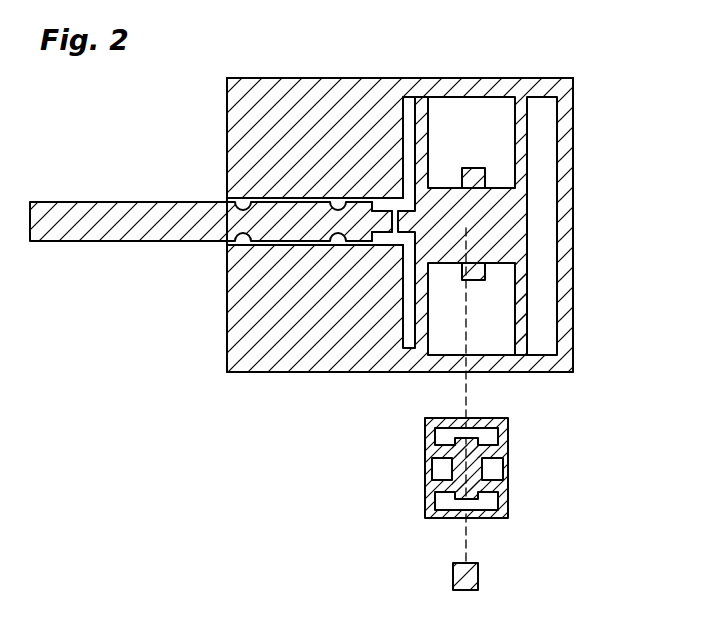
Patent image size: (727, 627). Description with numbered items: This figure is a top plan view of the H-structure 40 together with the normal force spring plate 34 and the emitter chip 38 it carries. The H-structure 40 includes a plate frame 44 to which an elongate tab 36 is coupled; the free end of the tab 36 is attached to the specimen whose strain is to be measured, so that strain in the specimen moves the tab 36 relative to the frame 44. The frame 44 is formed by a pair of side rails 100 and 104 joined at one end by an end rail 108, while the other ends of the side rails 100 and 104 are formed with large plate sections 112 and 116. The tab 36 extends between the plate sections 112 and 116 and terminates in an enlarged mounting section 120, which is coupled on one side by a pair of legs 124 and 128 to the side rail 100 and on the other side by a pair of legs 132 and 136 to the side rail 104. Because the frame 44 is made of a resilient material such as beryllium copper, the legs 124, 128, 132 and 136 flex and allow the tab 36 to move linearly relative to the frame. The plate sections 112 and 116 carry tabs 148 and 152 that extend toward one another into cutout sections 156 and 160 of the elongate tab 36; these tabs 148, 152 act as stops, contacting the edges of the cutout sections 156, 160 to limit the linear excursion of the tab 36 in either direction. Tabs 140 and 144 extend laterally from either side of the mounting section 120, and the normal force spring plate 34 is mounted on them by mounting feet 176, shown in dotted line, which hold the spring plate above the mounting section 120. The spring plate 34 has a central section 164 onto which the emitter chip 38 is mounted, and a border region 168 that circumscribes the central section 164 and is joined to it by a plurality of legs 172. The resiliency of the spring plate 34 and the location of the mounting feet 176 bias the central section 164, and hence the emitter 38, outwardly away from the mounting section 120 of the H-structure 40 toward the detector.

The normal force spring plate 34 is at (522, 468).
The elongate tab 36 is at (165, 232).
The emitter chip 38 is at (480, 576).
The H-structure 40 is at (590, 216).
The plate frame 44 is at (284, 68).
The side rail 100 is at (447, 88).
The side rail 104 is at (440, 375).
The end rail 108 is at (570, 186).
The plate section 112 is at (243, 106).
The plate section 116 is at (238, 334).
The enlarged mounting section 120 is at (515, 248).
The leg 124 is at (419, 121).
The leg 128 is at (528, 135).
The leg 132 is at (422, 330).
The leg 136 is at (518, 333).
The tab 140 is at (465, 176).
The tab 144 is at (485, 280).
The tab 148 is at (397, 204).
The tab 152 is at (388, 244).
The cutout section 156 is at (393, 200).
The cutout section 160 is at (378, 255).
The central section 164 is at (440, 470).
The border region 168 is at (440, 494).
The legs 172 is at (435, 456).
The mounting feet 176 is at (462, 430).